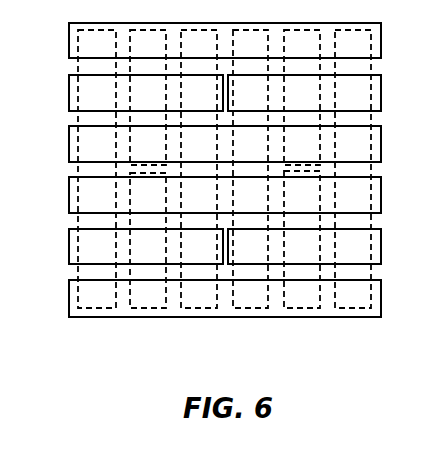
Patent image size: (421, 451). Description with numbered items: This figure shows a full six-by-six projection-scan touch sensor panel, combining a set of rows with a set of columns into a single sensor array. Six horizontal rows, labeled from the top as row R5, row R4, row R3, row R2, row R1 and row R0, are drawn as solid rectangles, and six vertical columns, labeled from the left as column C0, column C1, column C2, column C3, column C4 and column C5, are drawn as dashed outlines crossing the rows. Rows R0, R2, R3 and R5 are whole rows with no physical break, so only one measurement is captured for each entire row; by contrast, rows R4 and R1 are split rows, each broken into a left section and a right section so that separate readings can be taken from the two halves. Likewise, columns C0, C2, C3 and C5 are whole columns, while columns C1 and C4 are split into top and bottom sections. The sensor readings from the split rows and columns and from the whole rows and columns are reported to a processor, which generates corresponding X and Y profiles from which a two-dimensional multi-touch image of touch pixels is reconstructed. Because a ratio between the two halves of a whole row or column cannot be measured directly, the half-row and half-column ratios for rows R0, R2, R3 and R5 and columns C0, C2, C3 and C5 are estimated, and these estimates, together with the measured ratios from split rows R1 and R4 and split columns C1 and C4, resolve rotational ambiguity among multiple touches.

The row R5 is at (208, 42).
The row R4 is at (208, 94).
The row R3 is at (208, 144).
The row R2 is at (208, 195).
The row R1 is at (208, 247).
The row R0 is at (208, 298).
The column C0 is at (97, 194).
The column C1 is at (148, 194).
The column C2 is at (199, 194).
The column C3 is at (250, 194).
The column C4 is at (302, 194).
The column C5 is at (353, 194).